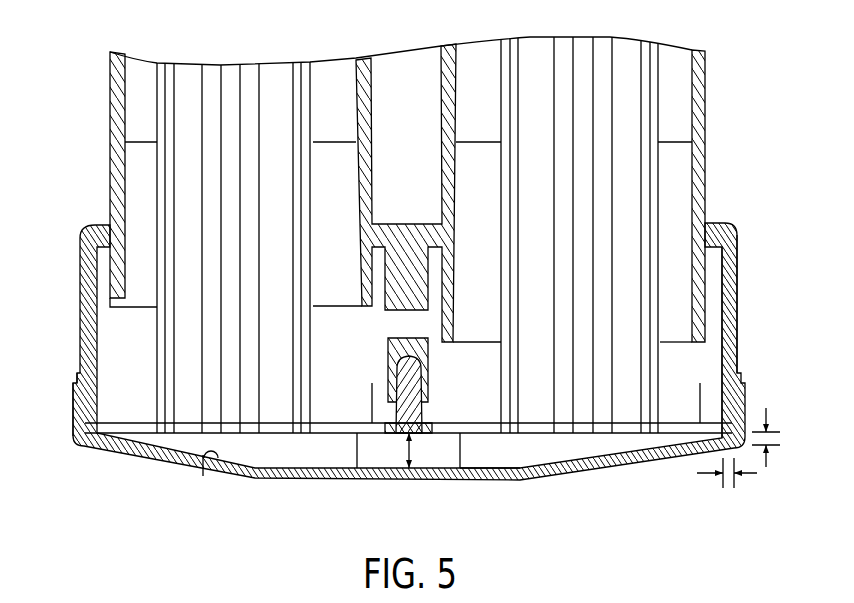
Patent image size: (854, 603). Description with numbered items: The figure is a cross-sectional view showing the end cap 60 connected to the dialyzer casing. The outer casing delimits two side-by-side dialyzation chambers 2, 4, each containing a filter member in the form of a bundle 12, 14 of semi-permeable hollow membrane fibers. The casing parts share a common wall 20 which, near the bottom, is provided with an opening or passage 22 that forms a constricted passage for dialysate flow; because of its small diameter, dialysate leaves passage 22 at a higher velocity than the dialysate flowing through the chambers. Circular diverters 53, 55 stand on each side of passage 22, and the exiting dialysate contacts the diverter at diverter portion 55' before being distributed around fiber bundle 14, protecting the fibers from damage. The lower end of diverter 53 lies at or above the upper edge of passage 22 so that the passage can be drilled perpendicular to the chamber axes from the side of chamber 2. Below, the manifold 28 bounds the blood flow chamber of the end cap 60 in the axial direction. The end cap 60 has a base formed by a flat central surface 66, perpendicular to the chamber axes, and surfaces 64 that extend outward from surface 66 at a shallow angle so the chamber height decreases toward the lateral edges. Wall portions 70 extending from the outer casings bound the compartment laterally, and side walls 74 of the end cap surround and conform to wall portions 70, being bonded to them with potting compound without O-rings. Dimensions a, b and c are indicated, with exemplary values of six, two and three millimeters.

The dialyzation chamber 2 is at (130, 190).
The dialyzation chamber 4 is at (683, 190).
The bundle of hollow membrane fibers 12 is at (278, 410).
The bundle of hollow membrane fibers 14 is at (603, 413).
The common wall 20 is at (412, 353).
The passage 22 is at (397, 325).
The manifold 28 is at (133, 422).
The circular diverter 53 is at (123, 298).
The circular diverter 55 is at (656, 303).
The diverter portion 55' is at (425, 193).
The end cap 60 is at (135, 463).
The inclined surface 64 is at (205, 473).
The flat central surface 66 is at (483, 463).
The wall portion 70 is at (738, 317).
The side wall 74 is at (72, 410).
The dimension a is at (407, 452).
The dimension b is at (727, 492).
The dimension c is at (775, 445).